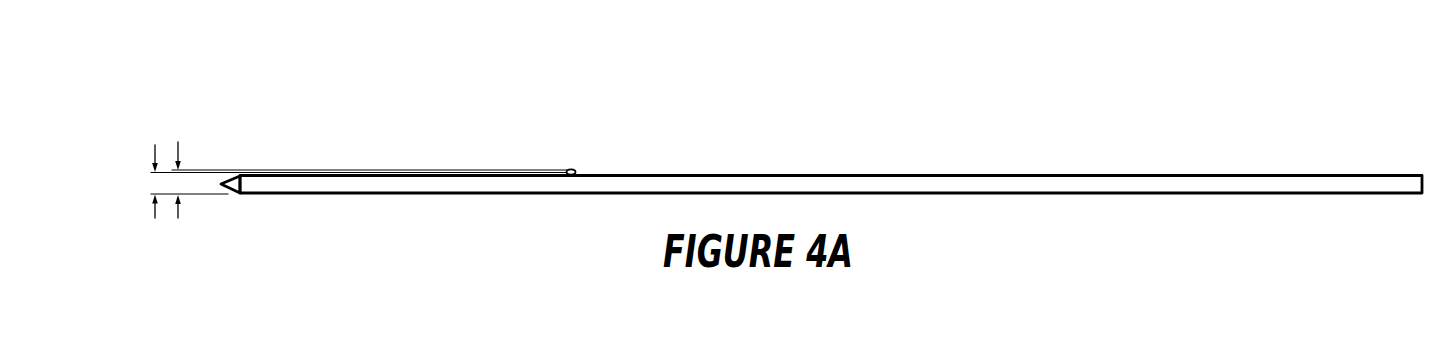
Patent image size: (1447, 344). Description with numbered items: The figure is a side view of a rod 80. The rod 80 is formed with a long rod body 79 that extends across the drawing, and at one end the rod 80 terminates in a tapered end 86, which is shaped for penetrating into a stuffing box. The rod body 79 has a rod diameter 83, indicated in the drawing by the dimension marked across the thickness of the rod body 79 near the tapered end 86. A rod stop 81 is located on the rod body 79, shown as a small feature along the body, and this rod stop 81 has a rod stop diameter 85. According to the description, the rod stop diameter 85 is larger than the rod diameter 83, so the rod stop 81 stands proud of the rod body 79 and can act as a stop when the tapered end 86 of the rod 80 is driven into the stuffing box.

The rod body 79 is at (1007, 174).
The rod 80 is at (184, 80).
The rod stop 81 is at (576, 171).
The rod diameter 83 is at (155, 220).
The rod stop diameter 85 is at (178, 142).
The tapered end 86 is at (224, 195).